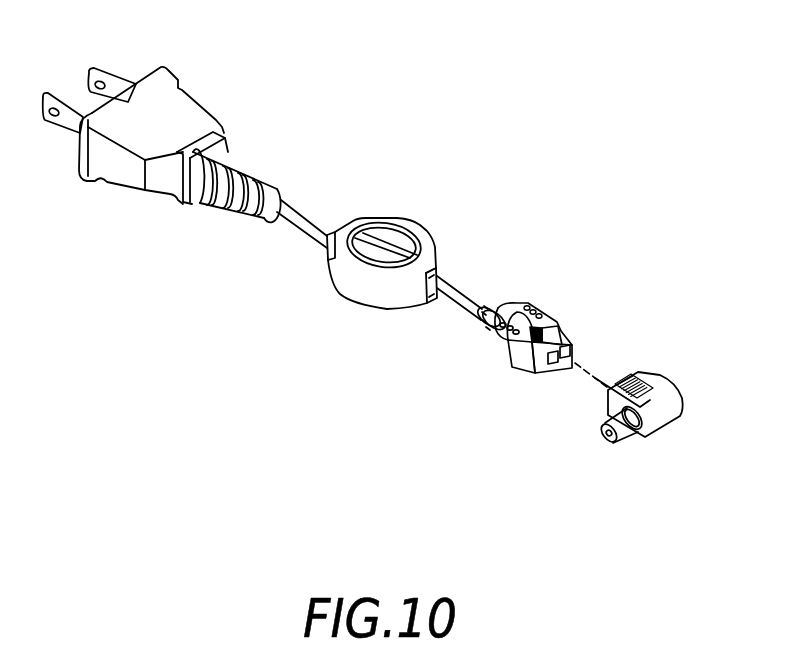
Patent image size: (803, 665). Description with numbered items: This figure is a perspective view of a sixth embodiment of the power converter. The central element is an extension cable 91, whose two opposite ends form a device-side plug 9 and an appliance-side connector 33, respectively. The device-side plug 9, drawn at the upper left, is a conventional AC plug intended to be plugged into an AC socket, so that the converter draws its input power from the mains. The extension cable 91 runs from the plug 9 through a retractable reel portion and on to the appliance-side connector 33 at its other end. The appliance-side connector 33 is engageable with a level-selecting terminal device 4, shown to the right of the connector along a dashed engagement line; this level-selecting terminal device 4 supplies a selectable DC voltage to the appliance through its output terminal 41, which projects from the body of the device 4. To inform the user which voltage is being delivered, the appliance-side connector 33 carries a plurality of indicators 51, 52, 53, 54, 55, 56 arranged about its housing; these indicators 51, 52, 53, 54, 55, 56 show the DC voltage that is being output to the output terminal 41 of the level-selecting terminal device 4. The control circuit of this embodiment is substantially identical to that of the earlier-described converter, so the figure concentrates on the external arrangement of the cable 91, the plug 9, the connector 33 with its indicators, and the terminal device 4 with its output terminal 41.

The device-side plug 9 is at (185, 120).
The extension cable 91 is at (303, 210).
The level-selecting terminal device 4 is at (655, 397).
The output terminal 41 is at (623, 430).
The indicator 51 is at (524, 305).
The indicator 52 is at (535, 310).
The indicator 53 is at (543, 317).
The indicator 54 is at (490, 335).
The indicator 55 is at (497, 352).
The indicator 56 is at (513, 370).
The appliance-side connector 33 is at (537, 375).